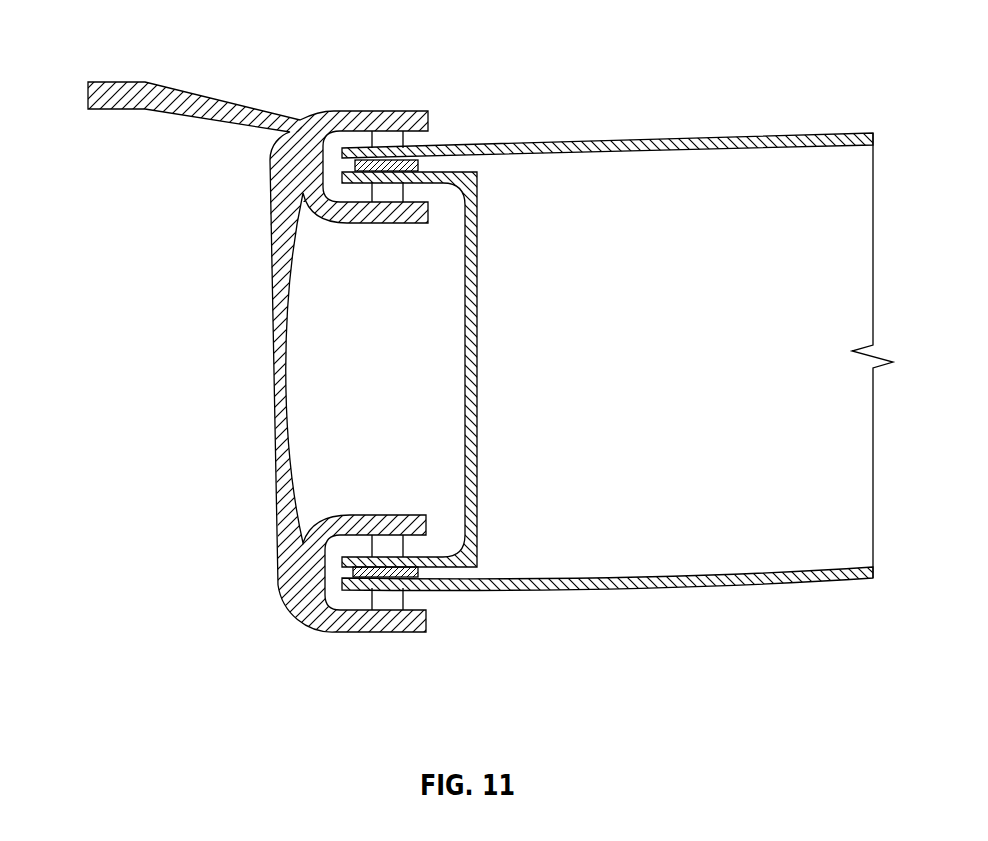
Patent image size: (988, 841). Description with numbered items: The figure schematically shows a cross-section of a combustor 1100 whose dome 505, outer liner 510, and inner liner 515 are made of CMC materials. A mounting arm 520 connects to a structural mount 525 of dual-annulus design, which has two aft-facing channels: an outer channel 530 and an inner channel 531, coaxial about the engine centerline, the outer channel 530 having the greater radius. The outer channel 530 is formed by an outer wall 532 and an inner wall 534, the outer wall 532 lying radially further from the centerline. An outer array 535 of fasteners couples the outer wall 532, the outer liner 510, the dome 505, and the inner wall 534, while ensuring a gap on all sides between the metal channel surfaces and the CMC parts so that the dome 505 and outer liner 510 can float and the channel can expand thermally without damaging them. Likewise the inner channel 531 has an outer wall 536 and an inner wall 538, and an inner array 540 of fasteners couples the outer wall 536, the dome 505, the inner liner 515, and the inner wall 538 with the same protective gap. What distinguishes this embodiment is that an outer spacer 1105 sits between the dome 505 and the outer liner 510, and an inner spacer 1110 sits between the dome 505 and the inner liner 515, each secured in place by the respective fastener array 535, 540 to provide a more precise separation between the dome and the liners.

The combustor 1100 is at (130, 38).
The dome 505 is at (472, 402).
The outer liner 510 is at (800, 148).
The inner liner 515 is at (728, 572).
The mounting arm 520 is at (200, 121).
The structural mount 525 is at (272, 365).
The outer channel 530 is at (267, 188).
The inner channel 531 is at (278, 577).
The outer wall 532 is at (389, 111).
The inner wall 534 is at (370, 223).
The outer array of fasteners 535 is at (385, 138).
The outer wall 536 is at (377, 513).
The inner wall 538 is at (346, 632).
The inner array of fasteners 540 is at (390, 597).
The outer spacer 1105 is at (468, 200).
The inner spacer 1110 is at (415, 571).